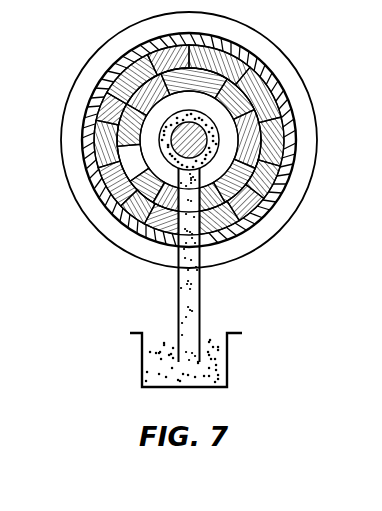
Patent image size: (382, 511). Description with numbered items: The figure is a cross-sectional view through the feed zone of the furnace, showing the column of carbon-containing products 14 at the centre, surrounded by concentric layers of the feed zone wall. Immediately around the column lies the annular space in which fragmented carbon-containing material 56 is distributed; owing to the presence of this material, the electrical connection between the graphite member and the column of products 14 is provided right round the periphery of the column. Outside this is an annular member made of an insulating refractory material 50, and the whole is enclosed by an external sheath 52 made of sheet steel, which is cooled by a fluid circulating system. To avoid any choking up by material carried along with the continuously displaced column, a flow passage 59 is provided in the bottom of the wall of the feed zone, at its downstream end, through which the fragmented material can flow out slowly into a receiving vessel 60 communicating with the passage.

The column of carbon-containing products 14 is at (216, 114).
The annular member of insulating refractory material 50 is at (90, 157).
The external sheath 52 is at (103, 198).
The fragmented carbon-containing material 56 is at (167, 128).
The flow passage 59 is at (189, 284).
The receiving vessel 60 is at (212, 357).